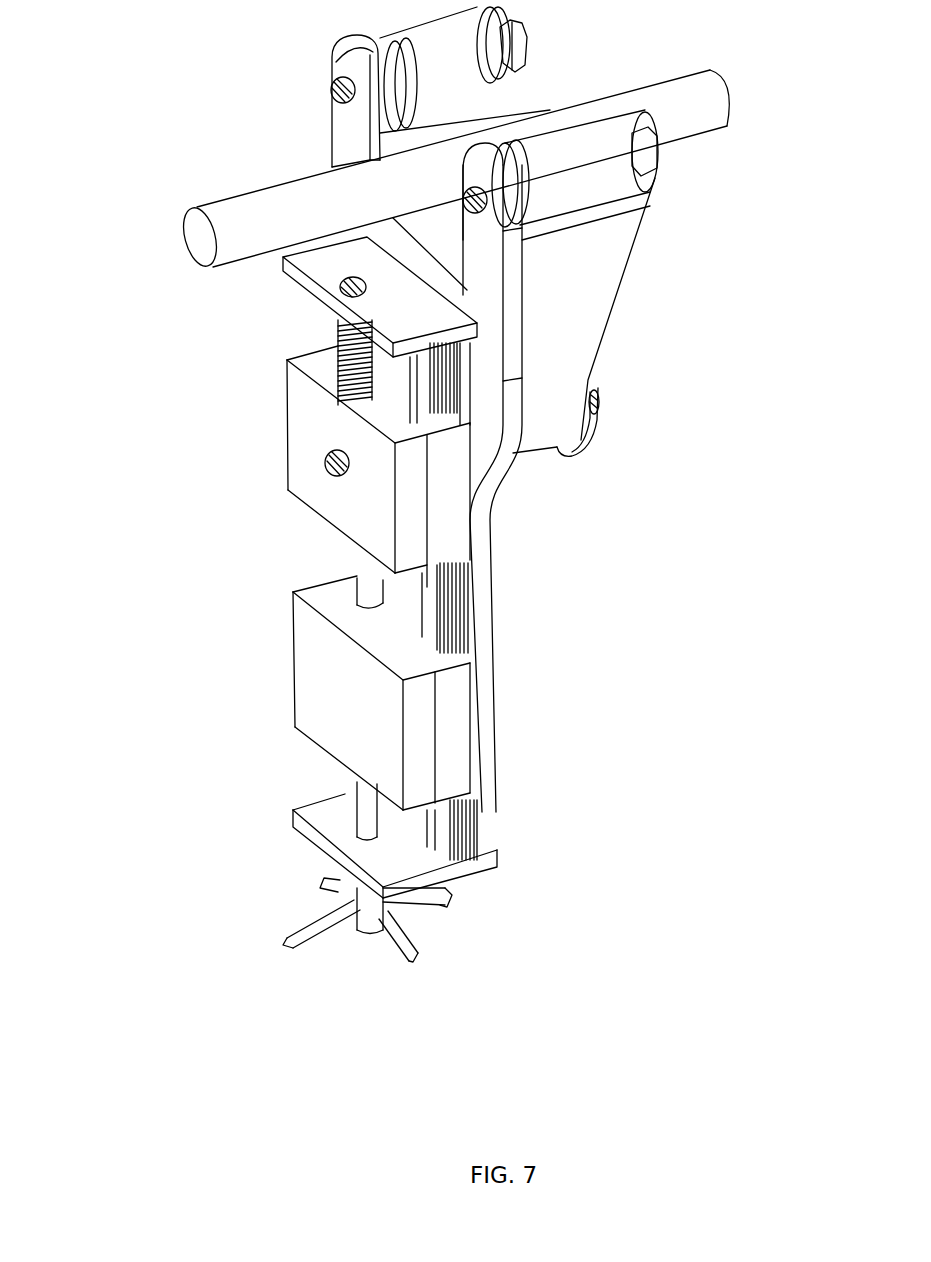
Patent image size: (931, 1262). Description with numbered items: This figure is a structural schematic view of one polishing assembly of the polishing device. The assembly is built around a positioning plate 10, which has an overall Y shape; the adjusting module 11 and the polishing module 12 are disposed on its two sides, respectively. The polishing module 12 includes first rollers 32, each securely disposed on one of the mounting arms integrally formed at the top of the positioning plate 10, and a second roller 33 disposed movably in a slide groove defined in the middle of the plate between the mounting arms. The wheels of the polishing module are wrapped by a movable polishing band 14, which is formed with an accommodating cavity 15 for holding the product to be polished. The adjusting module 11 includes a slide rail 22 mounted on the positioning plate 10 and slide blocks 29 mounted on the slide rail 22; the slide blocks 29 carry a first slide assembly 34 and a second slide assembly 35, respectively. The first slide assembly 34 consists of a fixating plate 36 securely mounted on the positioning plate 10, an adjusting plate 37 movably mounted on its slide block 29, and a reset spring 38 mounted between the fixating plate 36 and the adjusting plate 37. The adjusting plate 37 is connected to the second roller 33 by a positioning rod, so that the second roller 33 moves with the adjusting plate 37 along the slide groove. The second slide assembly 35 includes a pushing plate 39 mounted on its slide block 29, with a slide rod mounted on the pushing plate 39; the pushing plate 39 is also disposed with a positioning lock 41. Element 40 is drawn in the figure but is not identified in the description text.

The positioning plate 10 is at (487, 454).
The adjusting module 11 is at (101, 651).
The polishing module 12 is at (817, 320).
The polishing band 14 is at (593, 270).
The accommodating cavity 15 is at (440, 128).
The slide rail 22 is at (477, 827).
The slide blocks 29 is at (455, 530).
The first rollers 32 is at (528, 46).
The second roller 33 is at (602, 410).
The first slide assembly 34 is at (154, 455).
The second slide assembly 35 is at (196, 844).
The fixating plate 36 is at (300, 288).
The adjusting plate 37 is at (313, 452).
The reset spring 38 is at (333, 378).
The pushing plate 39 is at (330, 655).
The bottom plate 40 is at (335, 828).
The positioning lock 41 is at (328, 922).